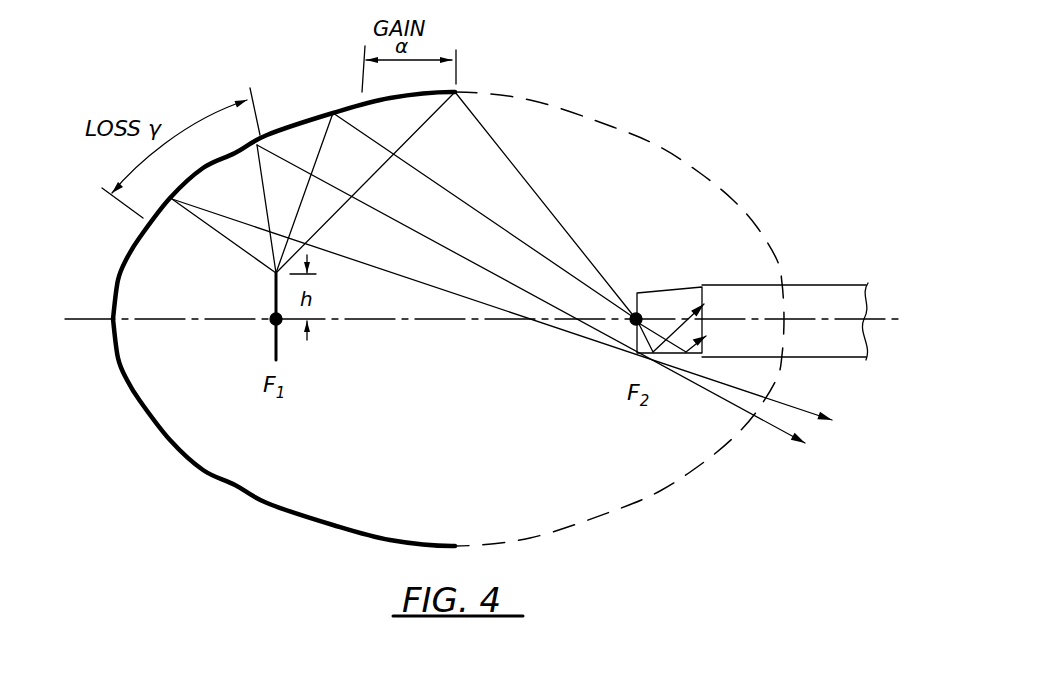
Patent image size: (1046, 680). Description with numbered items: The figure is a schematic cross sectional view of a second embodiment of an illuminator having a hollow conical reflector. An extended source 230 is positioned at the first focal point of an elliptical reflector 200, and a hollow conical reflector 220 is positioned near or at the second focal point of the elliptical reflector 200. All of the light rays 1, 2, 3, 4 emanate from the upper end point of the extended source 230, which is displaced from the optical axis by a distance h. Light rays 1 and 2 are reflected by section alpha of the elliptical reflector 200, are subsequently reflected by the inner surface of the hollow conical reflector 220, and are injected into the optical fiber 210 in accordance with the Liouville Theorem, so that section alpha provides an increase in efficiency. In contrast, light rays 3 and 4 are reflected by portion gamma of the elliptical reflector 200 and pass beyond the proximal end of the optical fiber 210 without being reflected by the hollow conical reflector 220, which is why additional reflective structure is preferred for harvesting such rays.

The elliptical reflector 200 is at (130, 254).
The optical fiber 210 is at (828, 284).
The hollow conical reflector 220 is at (663, 290).
The extended source 230 is at (272, 297).
The light ray 1 is at (579, 222).
The light ray 2 is at (530, 232).
The light ray 3 is at (539, 304).
The light ray 4 is at (512, 319).